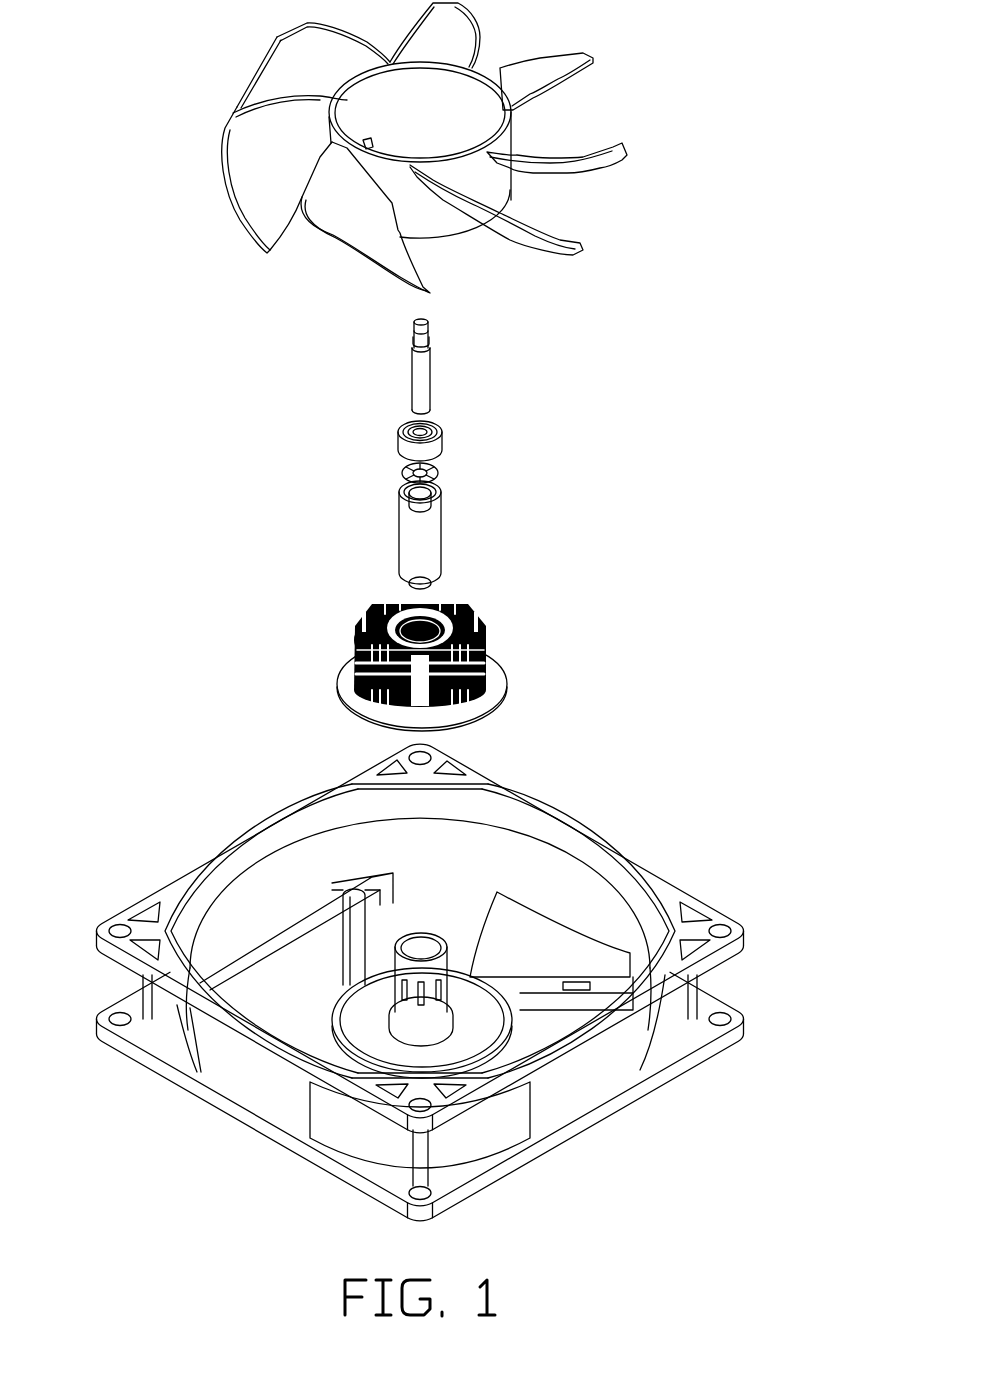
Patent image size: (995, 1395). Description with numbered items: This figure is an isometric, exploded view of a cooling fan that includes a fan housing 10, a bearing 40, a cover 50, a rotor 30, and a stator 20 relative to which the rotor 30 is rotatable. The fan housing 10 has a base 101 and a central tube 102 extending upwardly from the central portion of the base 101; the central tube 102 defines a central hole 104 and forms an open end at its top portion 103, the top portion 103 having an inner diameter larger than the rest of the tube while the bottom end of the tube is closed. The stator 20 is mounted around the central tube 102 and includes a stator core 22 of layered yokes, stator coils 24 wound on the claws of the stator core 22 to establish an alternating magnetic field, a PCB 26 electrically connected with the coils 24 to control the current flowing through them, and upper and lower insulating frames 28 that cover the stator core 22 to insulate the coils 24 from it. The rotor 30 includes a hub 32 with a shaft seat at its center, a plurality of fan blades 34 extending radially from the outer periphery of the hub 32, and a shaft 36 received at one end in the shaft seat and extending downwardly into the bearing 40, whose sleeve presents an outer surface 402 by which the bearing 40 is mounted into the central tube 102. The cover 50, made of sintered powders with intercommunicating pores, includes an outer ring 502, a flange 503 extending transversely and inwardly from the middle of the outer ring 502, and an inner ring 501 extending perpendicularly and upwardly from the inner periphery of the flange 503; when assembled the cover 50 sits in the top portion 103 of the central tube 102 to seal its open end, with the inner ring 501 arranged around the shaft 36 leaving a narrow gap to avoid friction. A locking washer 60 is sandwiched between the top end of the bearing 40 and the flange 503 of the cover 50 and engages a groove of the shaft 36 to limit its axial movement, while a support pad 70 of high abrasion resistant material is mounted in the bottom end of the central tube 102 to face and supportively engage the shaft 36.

The fan housing 10 is at (702, 842).
The base 101 is at (360, 1022).
The central tube 102 is at (340, 905).
The top portion 103 is at (392, 968).
The central hole 104 is at (416, 946).
The stator 20 is at (525, 640).
The stator core 22 is at (362, 678).
The stator coils 24 is at (387, 600).
The PCB 26 is at (362, 705).
The insulating frames 28 is at (362, 630).
The rotor 30 is at (628, 101).
The hub 32 is at (357, 90).
The fan blades 34 is at (247, 172).
The shaft 36 is at (414, 373).
The bearing 40 is at (432, 540).
The outer surface of bearing sleeve 402 is at (403, 530).
The cover 50 is at (292, 388).
The inner ring 501 is at (400, 422).
The outer ring 502 is at (408, 440).
The flange 503 is at (405, 434).
The locking washer 60 is at (458, 474).
The support pad 70 is at (433, 585).